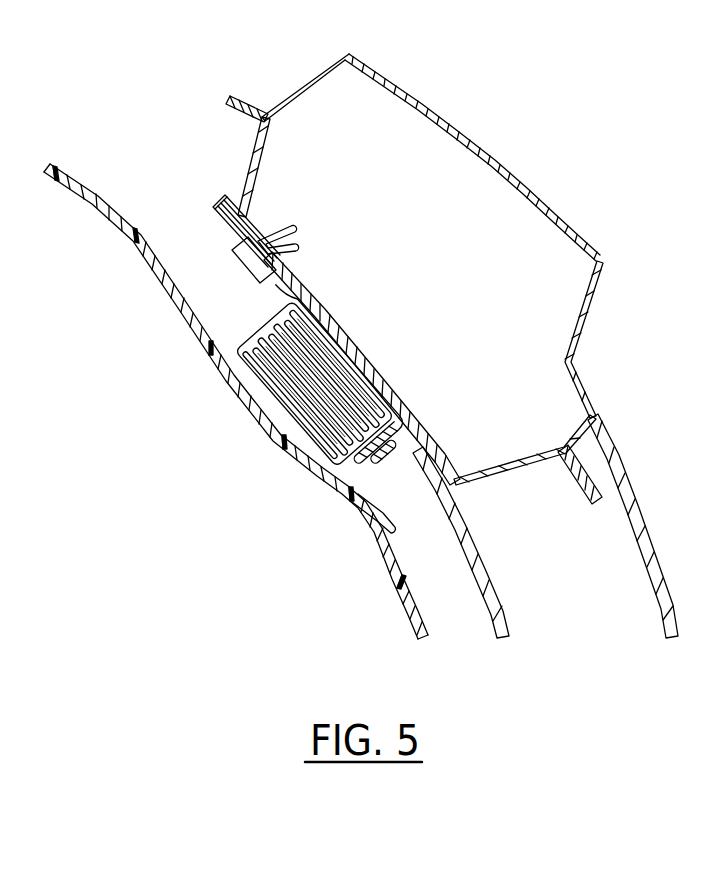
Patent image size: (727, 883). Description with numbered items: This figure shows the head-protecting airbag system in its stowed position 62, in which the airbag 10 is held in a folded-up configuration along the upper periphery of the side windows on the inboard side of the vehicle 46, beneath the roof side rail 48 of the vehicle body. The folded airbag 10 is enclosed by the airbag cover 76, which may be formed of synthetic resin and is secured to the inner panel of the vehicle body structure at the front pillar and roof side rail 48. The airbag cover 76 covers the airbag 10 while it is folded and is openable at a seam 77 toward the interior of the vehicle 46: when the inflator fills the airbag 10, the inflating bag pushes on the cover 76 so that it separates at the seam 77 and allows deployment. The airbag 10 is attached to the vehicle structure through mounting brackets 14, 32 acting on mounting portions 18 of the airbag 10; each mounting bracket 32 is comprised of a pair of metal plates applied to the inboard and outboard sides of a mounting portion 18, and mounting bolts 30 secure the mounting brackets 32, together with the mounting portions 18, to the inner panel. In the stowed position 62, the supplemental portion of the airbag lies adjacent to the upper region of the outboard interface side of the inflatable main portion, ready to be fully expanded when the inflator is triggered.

The stowed position 62 is at (105, 108).
The mounting brackets 14 is at (222, 203).
The mounting brackets 32 is at (246, 239).
The mounting bolts 30 is at (277, 225).
The airbag 10 is at (340, 336).
The mounting portions 18 is at (270, 291).
The airbag cover 76 is at (200, 346).
The seam 77 is at (362, 505).
The vehicle 46 is at (492, 462).
The roof side rail 48 is at (525, 450).